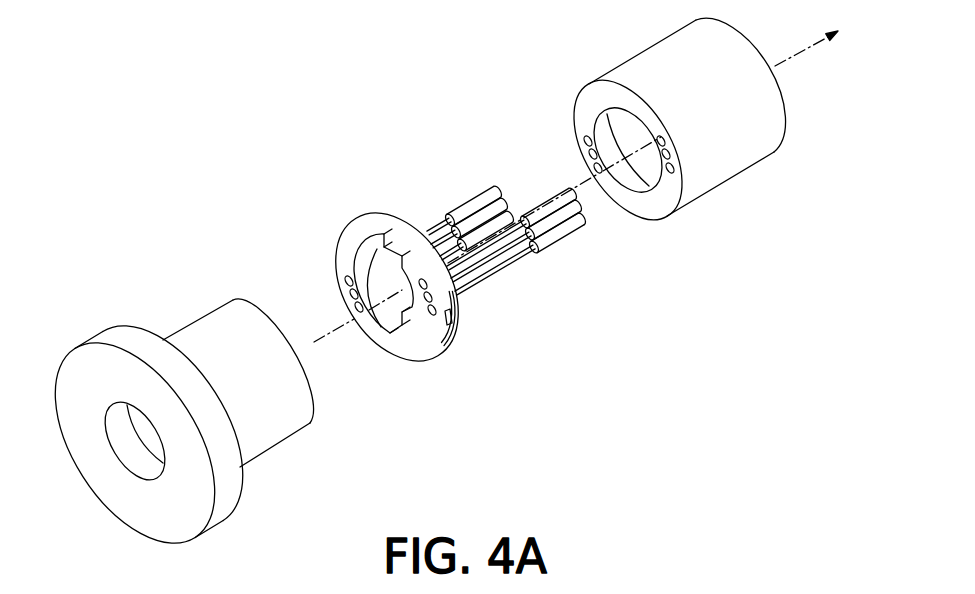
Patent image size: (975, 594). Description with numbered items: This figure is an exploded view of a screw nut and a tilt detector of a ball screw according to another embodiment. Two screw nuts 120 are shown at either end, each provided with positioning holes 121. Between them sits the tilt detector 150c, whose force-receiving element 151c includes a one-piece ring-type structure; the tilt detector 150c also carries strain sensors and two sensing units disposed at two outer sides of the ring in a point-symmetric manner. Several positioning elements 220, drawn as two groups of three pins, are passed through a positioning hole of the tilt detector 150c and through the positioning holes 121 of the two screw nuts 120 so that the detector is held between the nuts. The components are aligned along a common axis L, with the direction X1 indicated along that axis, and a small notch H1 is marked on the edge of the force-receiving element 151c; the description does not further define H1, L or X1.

The screw nut 120 is at (212, 338).
The positioning hole 121 is at (670, 175).
The tilt detector 150c is at (425, 247).
The force-receiving element 151c is at (412, 270).
The positioning element 220 is at (555, 238).
The notch H1 is at (450, 322).
The axis L is at (803, 50).
The direction X1 is at (848, 22).